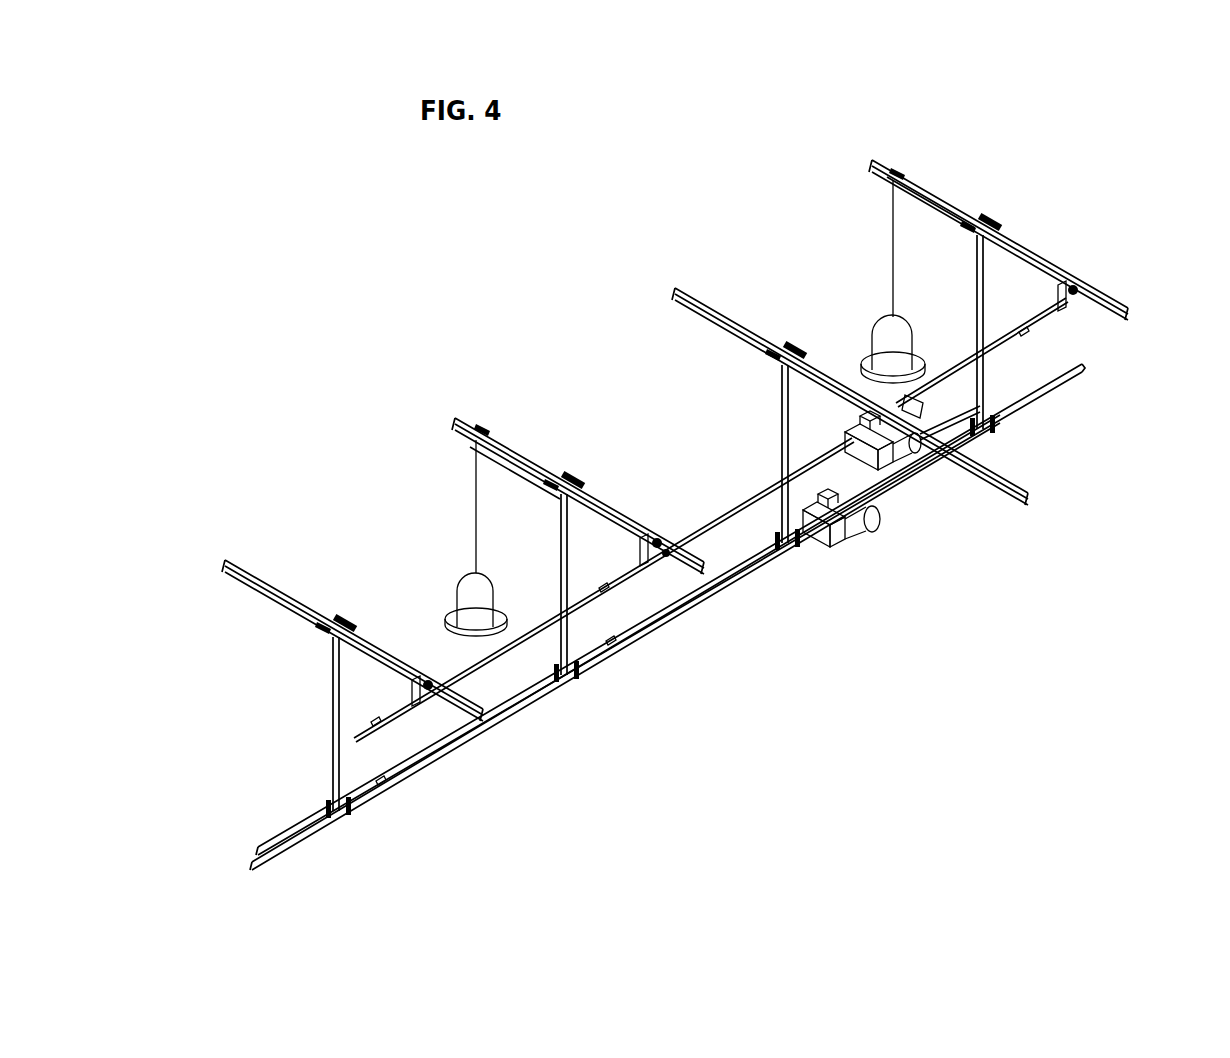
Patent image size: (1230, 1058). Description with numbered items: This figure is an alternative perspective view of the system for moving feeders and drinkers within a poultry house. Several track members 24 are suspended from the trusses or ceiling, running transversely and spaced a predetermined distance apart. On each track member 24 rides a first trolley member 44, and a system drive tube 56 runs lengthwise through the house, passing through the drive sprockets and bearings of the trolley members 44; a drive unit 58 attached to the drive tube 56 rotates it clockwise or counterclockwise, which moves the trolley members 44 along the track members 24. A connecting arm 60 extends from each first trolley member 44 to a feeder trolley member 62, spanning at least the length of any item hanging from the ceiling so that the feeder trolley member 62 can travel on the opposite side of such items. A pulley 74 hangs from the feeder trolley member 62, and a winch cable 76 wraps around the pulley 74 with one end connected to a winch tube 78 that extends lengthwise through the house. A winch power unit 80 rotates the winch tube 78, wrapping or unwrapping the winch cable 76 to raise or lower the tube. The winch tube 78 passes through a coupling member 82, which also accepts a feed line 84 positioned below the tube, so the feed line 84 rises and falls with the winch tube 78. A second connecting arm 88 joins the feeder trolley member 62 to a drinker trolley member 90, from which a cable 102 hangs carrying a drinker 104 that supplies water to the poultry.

The track member 24 is at (247, 560).
The first trolley member 44 is at (430, 663).
The system drive tube 56 is at (537, 635).
The drive unit 58 is at (890, 455).
The connecting arm 60 is at (373, 650).
The feeder trolley member 62 is at (338, 610).
The pulley 74 is at (331, 659).
The winch cable 76 is at (339, 717).
The winch tube 78 is at (287, 832).
The winch power unit 80 is at (843, 548).
The coupling member 82 is at (344, 828).
The feed line 84 is at (450, 757).
The connecting arm 88 is at (507, 453).
The drinker trolley member 90 is at (483, 427).
The cable 102 is at (472, 490).
The drinker 104 is at (485, 600).